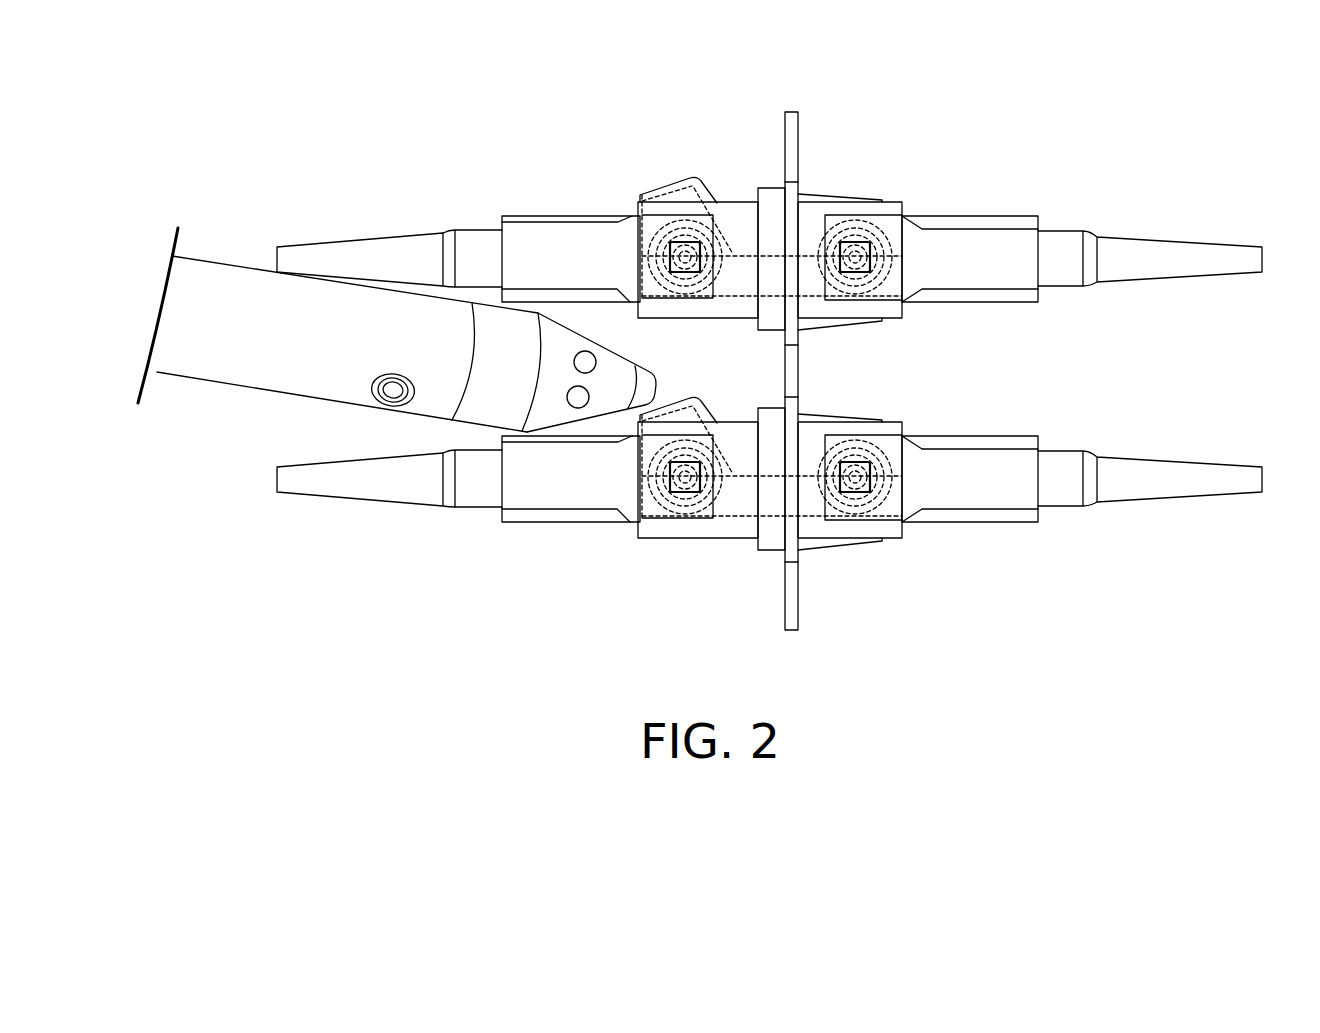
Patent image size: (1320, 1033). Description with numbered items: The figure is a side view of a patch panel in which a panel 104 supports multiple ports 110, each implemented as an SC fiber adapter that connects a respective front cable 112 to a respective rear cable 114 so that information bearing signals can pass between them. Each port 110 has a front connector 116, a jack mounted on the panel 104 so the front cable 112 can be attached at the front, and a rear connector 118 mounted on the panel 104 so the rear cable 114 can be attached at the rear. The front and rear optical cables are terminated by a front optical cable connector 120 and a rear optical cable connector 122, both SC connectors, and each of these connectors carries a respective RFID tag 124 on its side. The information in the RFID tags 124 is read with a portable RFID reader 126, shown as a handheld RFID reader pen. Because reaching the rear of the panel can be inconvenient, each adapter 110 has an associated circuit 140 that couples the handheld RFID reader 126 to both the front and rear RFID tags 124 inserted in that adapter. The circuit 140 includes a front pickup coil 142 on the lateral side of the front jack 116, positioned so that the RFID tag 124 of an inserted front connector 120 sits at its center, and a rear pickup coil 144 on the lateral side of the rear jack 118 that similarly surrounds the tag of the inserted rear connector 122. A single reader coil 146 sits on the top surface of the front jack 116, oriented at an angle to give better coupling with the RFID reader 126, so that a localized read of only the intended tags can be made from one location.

The panel 104 is at (792, 145).
The port 110 is at (710, 90).
The front cable 112 is at (317, 233).
The rear cable 114 is at (1145, 200).
The front connector 116 is at (545, 220).
The rear connector 118 is at (1000, 217).
The front optical cable connector 120 is at (708, 162).
The rear optical cable connector 122 is at (920, 165).
The RFID tag 124 is at (670, 258).
The portable RFID reader 126 is at (247, 388).
The circuit 140 is at (830, 207).
The front pickup coil 142 is at (683, 297).
The rear pickup coil 144 is at (870, 272).
The reader coil 146 is at (660, 187).